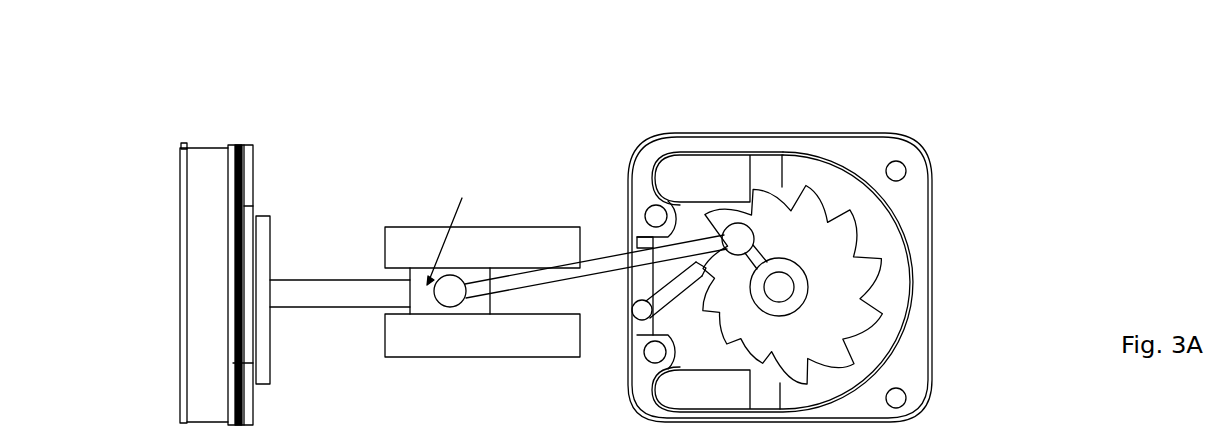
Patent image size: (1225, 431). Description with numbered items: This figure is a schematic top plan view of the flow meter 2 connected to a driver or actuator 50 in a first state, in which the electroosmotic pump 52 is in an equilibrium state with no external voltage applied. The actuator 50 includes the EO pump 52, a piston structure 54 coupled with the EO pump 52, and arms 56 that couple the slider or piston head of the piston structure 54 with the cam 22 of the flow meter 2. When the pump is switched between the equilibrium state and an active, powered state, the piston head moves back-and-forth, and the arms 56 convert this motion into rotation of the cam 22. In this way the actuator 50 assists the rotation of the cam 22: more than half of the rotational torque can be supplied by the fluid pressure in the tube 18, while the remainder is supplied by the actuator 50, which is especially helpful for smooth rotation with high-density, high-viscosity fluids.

The flow meter 2 is at (722, 97).
The tube 18 is at (828, 182).
The cam 22 is at (836, 259).
The actuator 50 is at (550, 98).
The electroosmotic (EO) pump 52 is at (208, 180).
The piston structure 54 is at (580, 181).
The arms 56 is at (608, 256).